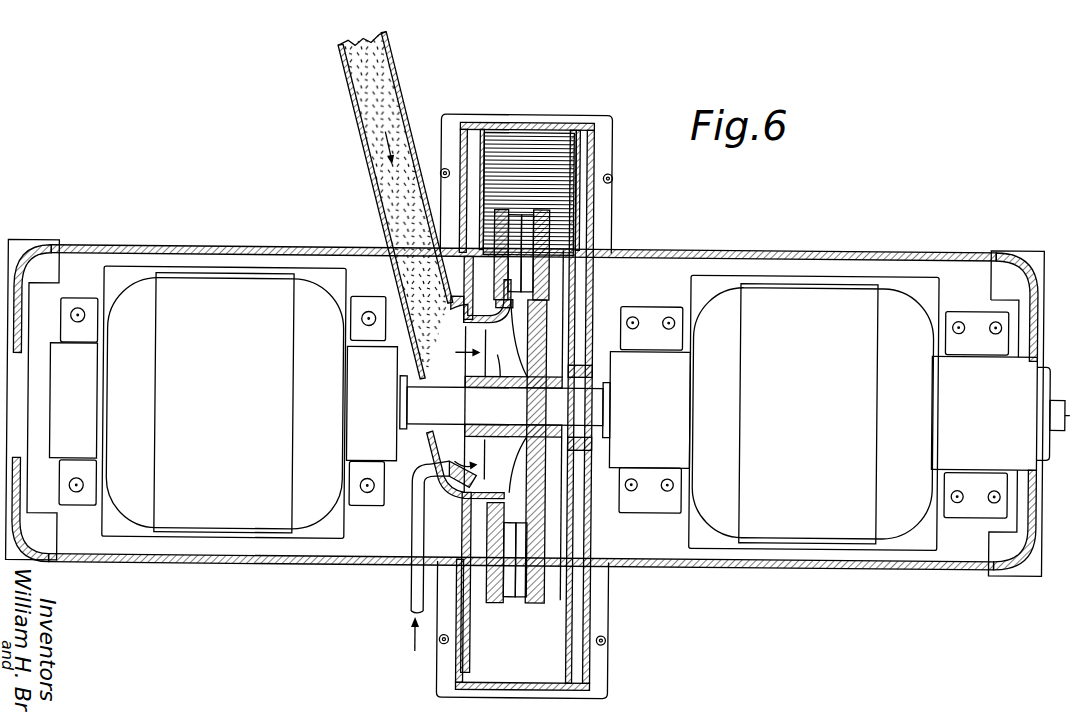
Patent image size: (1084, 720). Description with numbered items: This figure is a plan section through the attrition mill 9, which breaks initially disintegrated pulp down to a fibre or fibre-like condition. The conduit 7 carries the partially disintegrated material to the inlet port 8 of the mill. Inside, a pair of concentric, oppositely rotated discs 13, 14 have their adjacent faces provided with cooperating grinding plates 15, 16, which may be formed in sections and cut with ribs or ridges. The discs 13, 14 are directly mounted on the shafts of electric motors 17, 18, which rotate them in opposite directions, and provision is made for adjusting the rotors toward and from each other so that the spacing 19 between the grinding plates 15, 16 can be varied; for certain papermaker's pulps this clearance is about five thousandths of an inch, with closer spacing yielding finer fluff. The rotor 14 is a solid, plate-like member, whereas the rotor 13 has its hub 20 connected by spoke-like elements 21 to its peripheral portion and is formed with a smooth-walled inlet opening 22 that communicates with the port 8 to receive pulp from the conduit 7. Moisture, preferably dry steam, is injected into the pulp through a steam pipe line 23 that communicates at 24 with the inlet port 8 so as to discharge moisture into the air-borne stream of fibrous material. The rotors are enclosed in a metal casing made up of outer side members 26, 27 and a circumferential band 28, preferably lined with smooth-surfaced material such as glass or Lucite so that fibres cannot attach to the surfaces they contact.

The conduit 7 is at (394, 73).
The inlet port 8 is at (397, 330).
The attrition mill 9 is at (512, 121).
The disc 13 is at (492, 604).
The disc 14 is at (542, 604).
The grinding plate 15 is at (508, 604).
The grinding plate 16 is at (521, 604).
The electric motor 17 is at (213, 280).
The electric motor 18 is at (802, 293).
The spacing 19 is at (518, 242).
The hub 20 is at (485, 383).
The spoke-like elements 21 is at (477, 393).
The inlet opening 22 is at (478, 322).
The steam pipe line 23 is at (410, 578).
The steam pipe connection 24 is at (440, 485).
The outer side member 26 is at (458, 153).
The outer side member 27 is at (593, 158).
The circumferential band 28 is at (553, 126).